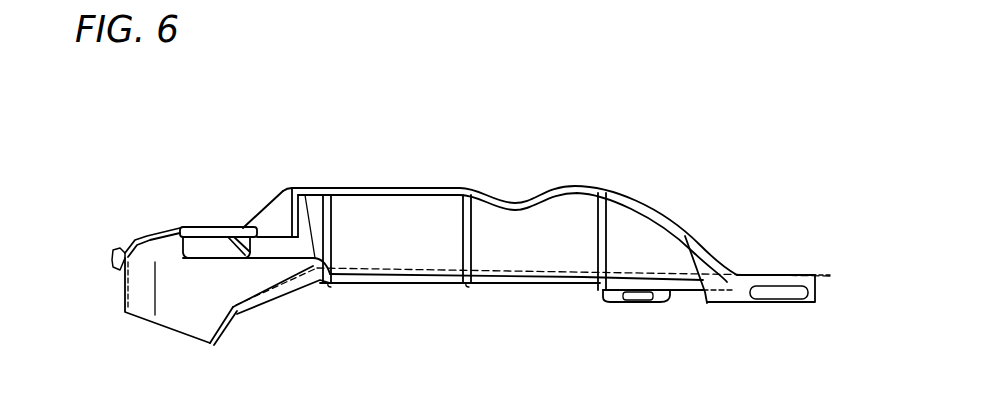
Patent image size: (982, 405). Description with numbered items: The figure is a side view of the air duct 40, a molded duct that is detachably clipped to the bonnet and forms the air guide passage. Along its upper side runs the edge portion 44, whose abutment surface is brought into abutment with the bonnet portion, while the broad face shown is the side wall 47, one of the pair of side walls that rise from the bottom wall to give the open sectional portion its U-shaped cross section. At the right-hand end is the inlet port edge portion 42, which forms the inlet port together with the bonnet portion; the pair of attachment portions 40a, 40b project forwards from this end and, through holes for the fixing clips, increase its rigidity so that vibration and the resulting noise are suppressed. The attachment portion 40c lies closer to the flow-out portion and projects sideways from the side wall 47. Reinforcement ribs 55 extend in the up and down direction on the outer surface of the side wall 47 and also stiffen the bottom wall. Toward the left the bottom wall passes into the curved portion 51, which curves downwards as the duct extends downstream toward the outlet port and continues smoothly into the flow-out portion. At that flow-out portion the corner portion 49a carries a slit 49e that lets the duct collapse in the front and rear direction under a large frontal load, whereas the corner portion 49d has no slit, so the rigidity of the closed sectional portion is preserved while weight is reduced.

The air duct 40 is at (613, 127).
The attachment portion 40a is at (778, 277).
The attachment portion 40b is at (642, 298).
The attachment portion 40c is at (167, 234).
The inlet port edge portion 42 is at (689, 292).
The edge portion 44 is at (136, 242).
The side wall 47 is at (497, 223).
The corner portion 49a is at (232, 318).
The corner portion 49d is at (160, 290).
The slit 49e is at (223, 332).
The curved portion 51 is at (282, 280).
The reinforcement ribs 55 is at (462, 230).